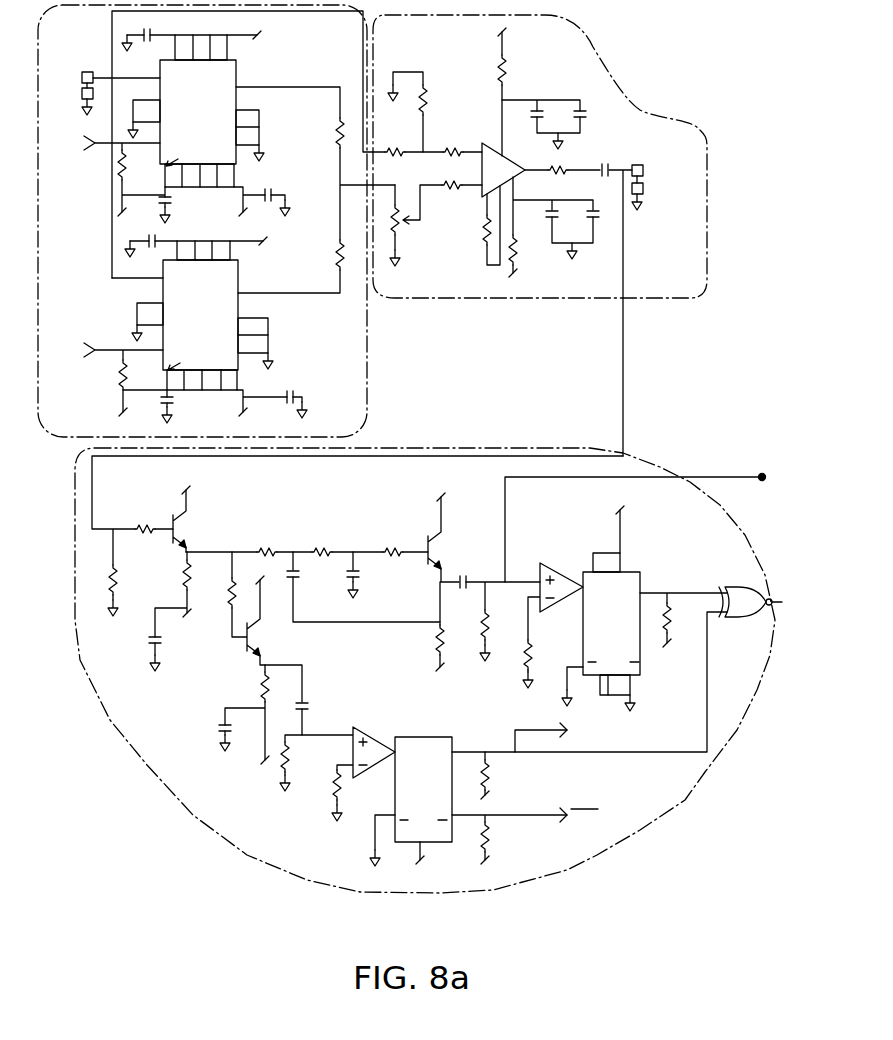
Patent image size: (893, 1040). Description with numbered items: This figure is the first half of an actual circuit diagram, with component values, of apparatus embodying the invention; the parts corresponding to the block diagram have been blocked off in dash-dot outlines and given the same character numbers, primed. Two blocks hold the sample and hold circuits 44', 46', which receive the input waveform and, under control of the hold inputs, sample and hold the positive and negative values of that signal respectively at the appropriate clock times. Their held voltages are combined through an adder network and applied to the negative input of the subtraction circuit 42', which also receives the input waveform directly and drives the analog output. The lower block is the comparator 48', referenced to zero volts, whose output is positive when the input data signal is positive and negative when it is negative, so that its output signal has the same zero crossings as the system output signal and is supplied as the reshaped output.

The sample and hold circuit 44' is at (260, 220).
The sample and hold circuit 46' is at (236, 217).
The subtraction circuit 42' is at (540, 235).
The comparator 48' is at (428, 659).